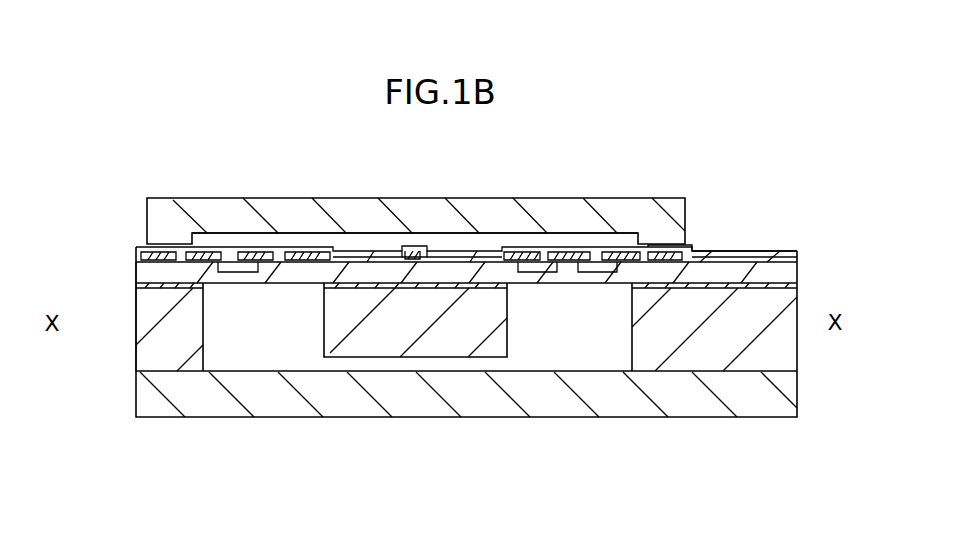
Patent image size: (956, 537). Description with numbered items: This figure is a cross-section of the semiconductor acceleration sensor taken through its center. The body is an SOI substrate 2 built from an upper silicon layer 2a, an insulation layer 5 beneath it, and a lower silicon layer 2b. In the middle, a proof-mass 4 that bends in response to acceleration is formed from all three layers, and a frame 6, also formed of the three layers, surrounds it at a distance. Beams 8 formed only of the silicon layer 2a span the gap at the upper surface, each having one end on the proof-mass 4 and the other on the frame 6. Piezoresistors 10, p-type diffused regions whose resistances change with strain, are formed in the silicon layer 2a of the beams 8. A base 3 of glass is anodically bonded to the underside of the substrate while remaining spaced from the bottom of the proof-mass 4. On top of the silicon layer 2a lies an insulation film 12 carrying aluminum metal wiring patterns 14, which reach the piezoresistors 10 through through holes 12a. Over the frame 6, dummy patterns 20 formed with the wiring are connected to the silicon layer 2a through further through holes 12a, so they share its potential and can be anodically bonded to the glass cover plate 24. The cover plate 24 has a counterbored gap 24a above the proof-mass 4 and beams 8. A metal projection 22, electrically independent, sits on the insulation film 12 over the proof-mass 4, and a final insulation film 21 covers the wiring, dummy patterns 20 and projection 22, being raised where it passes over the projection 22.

The SOI substrate 2 is at (97, 260).
The silicon layer 2a is at (133, 263).
The silicon layer 2b is at (133, 287).
The base 3 is at (785, 402).
The proof-mass 4 is at (443, 313).
The insulation layer 5 is at (770, 286).
The frame 6 is at (765, 331).
The beams 8 is at (262, 278).
The piezoresistors 10 is at (597, 270).
The insulation film 12 is at (725, 258).
The through holes 12a is at (678, 258).
The metal wiring patterns 14 is at (572, 252).
The dummy patterns 20 is at (660, 258).
The insulation film 21 is at (777, 252).
The projection 22 is at (413, 244).
The cover plate 24 is at (460, 210).
The gap 24a is at (352, 240).